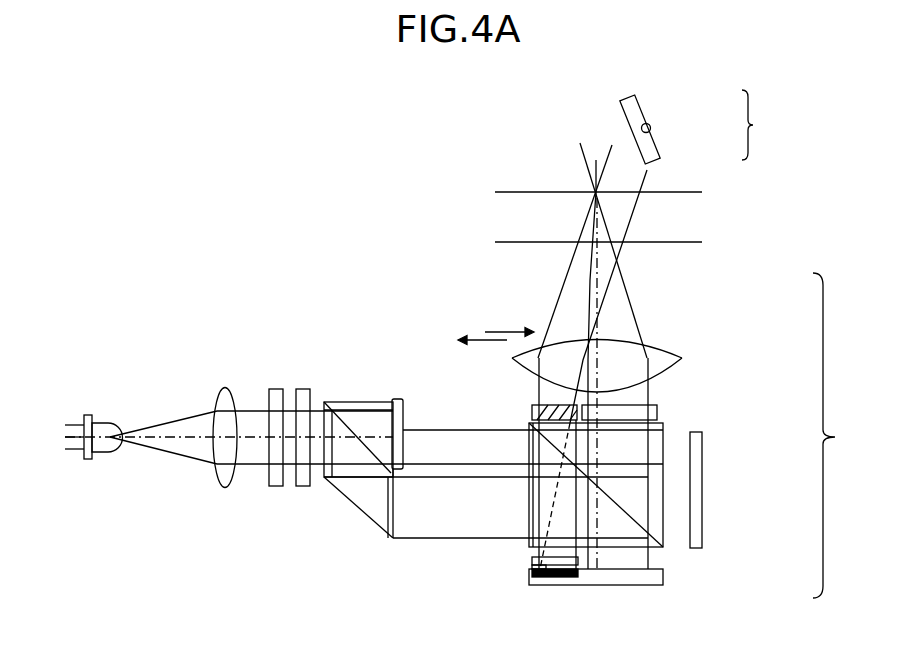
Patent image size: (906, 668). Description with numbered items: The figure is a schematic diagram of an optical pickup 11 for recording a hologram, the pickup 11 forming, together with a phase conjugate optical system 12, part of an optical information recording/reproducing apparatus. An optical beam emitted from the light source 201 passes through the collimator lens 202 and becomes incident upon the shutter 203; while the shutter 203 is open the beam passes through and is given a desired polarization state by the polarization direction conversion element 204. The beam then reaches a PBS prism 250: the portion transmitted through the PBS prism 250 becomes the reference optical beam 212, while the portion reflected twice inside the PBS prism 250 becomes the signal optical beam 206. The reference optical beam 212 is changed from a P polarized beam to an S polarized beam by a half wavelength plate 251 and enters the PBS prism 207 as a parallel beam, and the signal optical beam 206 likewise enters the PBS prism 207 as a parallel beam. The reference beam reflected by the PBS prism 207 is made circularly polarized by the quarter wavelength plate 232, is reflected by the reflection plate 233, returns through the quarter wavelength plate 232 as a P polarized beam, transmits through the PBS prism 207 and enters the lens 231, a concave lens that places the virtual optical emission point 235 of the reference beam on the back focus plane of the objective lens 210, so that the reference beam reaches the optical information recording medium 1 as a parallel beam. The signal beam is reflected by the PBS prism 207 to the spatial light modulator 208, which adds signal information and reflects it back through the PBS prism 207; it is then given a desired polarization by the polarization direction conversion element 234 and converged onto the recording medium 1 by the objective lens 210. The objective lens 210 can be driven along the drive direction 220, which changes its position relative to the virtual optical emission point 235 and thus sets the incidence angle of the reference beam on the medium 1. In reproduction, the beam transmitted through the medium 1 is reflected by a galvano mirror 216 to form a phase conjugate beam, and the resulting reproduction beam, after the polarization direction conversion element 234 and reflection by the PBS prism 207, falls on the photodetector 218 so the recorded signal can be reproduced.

The optical information recording medium 1 is at (512, 216).
The pickup 11 is at (840, 435).
The phase conjugate optical system 12 is at (764, 125).
The light source 201 is at (108, 423).
The collimator lens 202 is at (226, 388).
The shutter 203 is at (276, 389).
The polarization direction conversion element 204 is at (303, 487).
The signal optical beam 206 is at (628, 296).
The PBS prism 207 is at (668, 427).
The spatial light modulator 208 is at (634, 586).
The objective lens 210 is at (674, 347).
The reference optical beam 212 is at (564, 290).
The galvano mirror 216 is at (658, 142).
The photodetector 218 is at (705, 487).
The drive direction 220 is at (497, 332).
The lens 231 is at (530, 410).
The quarter wavelength plate 232 is at (530, 559).
The reflection plate 233 is at (557, 586).
The polarization direction conversion element 234 is at (660, 405).
The virtual optical emission point 235 is at (532, 570).
The PBS prism 250 is at (344, 402).
The half wavelength plate 251 is at (398, 399).